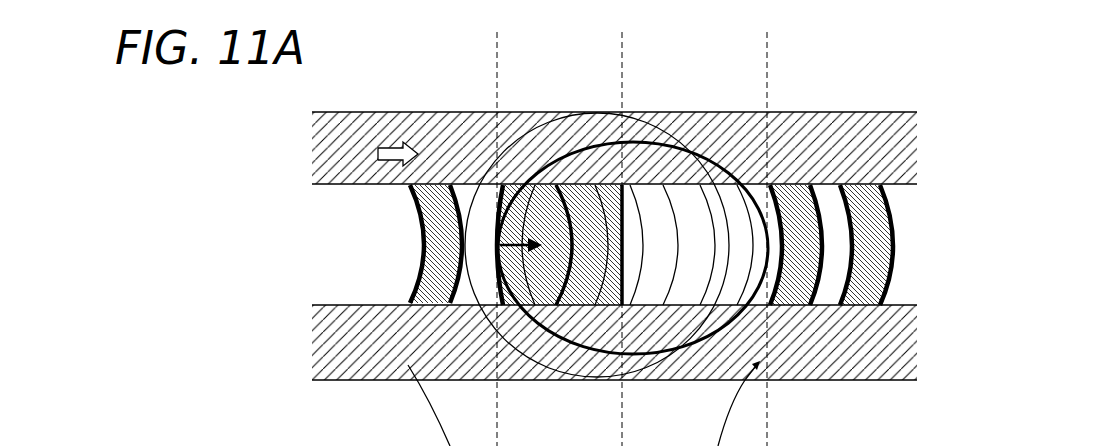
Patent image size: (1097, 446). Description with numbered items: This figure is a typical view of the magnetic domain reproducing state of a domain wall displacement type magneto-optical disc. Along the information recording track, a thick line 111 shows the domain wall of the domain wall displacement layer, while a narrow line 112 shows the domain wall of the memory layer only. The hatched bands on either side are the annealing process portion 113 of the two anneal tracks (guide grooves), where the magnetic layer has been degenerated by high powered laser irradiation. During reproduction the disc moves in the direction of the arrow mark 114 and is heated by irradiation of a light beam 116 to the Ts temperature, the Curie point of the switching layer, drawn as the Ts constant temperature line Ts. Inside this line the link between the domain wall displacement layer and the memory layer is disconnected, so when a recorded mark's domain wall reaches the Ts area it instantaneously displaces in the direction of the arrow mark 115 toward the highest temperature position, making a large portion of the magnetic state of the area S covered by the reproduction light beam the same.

The thick line 111 is at (820, 217).
The narrow line 112 is at (678, 217).
The annealing process portion 113 is at (877, 122).
The arrow mark 114 is at (391, 157).
The arrow mark 115 is at (497, 182).
The light beam 116 is at (435, 405).
The area covered by the reproduction light beam S is at (521, 128).
The Ts constant temperature line Ts is at (716, 152).